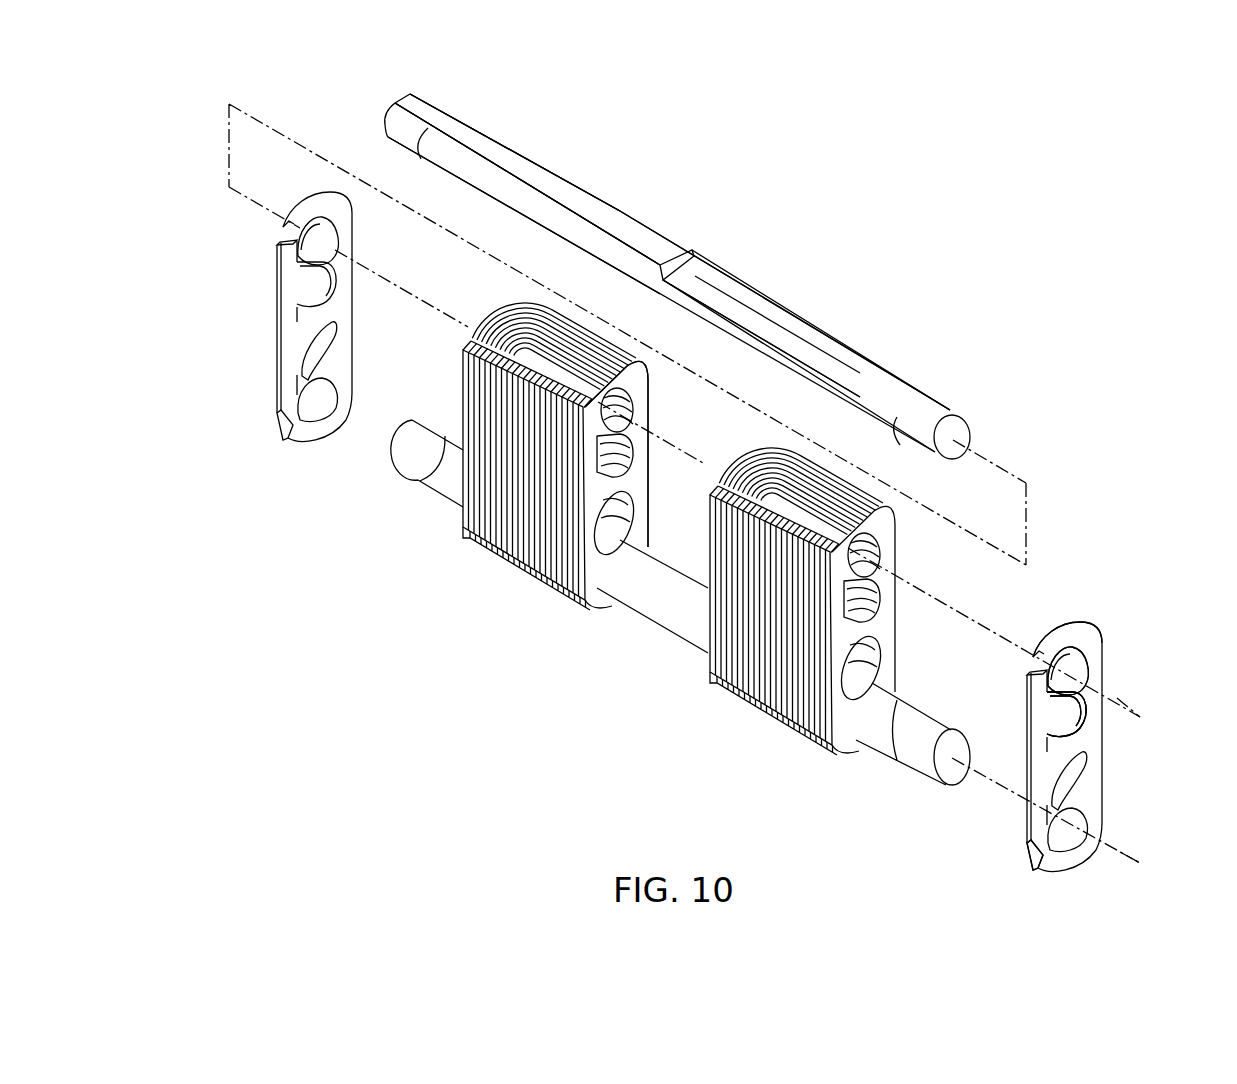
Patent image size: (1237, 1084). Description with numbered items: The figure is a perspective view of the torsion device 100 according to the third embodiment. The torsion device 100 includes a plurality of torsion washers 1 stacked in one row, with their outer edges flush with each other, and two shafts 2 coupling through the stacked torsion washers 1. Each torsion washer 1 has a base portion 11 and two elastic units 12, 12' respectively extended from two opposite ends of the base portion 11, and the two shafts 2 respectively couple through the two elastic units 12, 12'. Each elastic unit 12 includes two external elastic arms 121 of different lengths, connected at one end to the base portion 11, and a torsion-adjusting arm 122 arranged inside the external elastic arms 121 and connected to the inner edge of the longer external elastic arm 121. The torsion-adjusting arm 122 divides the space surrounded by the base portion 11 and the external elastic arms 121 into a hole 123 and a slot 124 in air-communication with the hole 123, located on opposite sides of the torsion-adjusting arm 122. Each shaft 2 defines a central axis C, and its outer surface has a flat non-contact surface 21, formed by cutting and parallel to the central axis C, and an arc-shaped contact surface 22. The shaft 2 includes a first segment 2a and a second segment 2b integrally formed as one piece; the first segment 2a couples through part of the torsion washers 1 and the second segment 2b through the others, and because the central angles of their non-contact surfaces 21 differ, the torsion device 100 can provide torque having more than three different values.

The torsion device 100 is at (1102, 140).
The torsion washer 1 is at (535, 572).
The base portion 11 is at (1072, 747).
The shaft 2 is at (446, 498).
The first segment 2a is at (638, 207).
The second segment 2b is at (755, 273).
The non-contact surface 21 is at (522, 170).
The contact surface 22 is at (567, 232).
The elastic unit 12 is at (710, 531).
The elastic unit 12' is at (989, 849).
The external elastic arm 121 is at (1048, 659).
The torsion-adjusting arm 122 is at (1057, 708).
The hole 123 is at (1077, 653).
The slot 124 is at (1064, 717).
The central axis C is at (1125, 700).